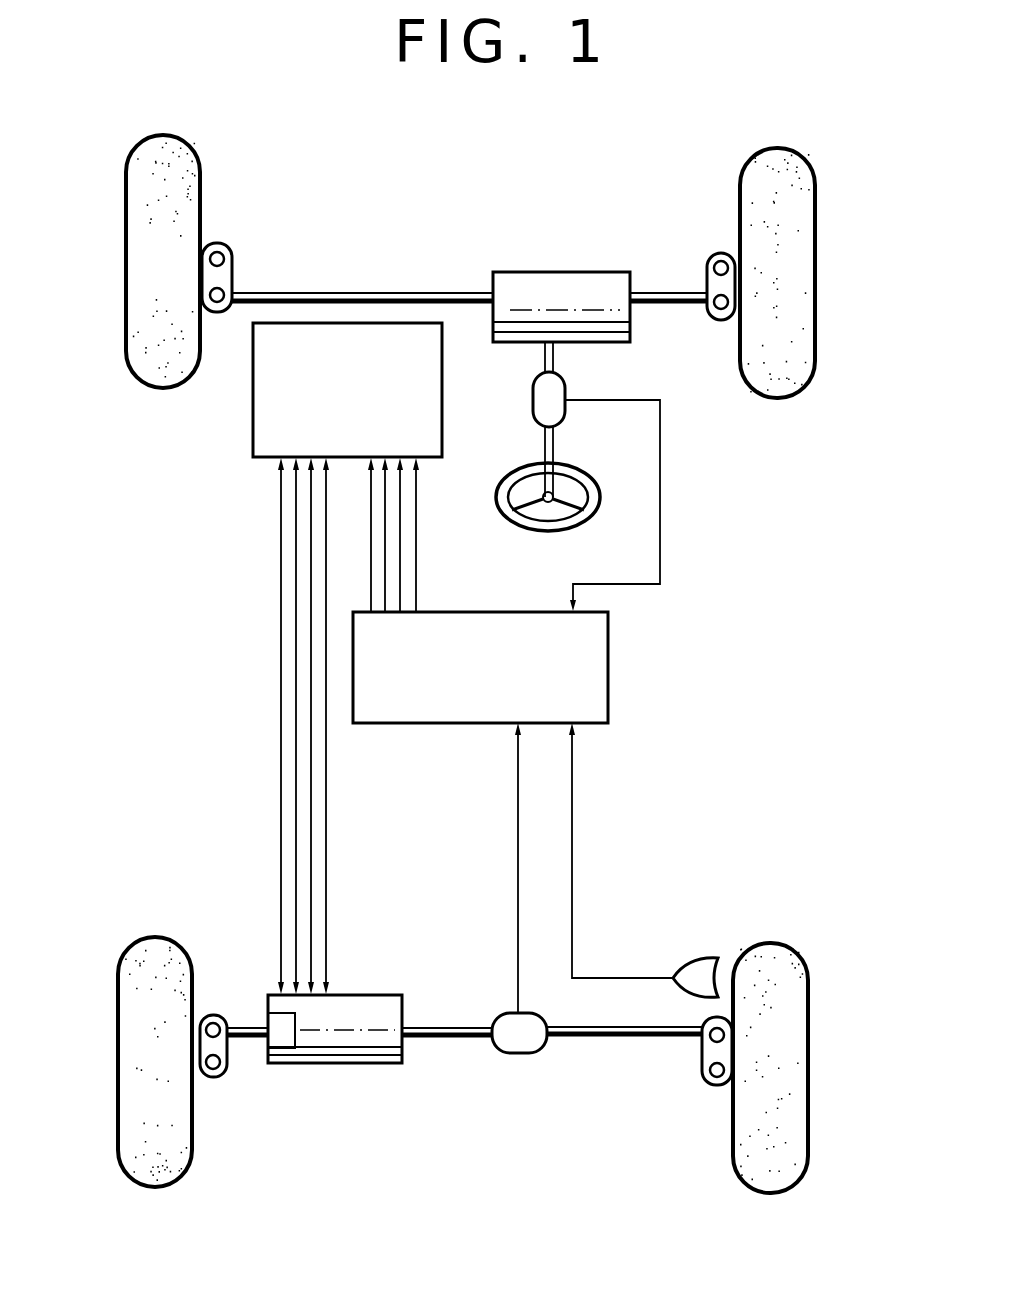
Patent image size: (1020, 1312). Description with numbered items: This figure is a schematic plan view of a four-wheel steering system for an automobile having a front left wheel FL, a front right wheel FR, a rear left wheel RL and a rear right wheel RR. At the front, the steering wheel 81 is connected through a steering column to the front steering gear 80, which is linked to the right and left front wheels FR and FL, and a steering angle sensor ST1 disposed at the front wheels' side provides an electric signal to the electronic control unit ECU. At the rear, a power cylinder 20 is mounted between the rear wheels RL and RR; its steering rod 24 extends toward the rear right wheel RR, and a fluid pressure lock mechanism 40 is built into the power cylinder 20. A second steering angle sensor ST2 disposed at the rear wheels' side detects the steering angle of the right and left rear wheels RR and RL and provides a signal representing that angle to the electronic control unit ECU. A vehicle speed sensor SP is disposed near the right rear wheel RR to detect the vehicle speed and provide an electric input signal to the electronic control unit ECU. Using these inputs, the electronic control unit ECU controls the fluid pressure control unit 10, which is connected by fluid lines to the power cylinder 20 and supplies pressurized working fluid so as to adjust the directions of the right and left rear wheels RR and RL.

The front left wheel FL is at (126, 212).
The front right wheel FR is at (815, 240).
The rear left wheel RL is at (118, 1047).
The rear right wheel RR is at (808, 1052).
The front steering gear 80 is at (595, 272).
The steering wheel 81 is at (530, 530).
The steering angle sensor ST1 is at (533, 393).
The fluid pressure control unit 10 is at (253, 410).
The electronic control unit ECU is at (452, 727).
The power cylinder 20 is at (320, 1057).
The fluid pressure lock mechanism 40 is at (285, 1035).
The steering rod 24 is at (630, 1042).
The steering angle sensor ST2 is at (535, 1050).
The vehicle speed sensor SP is at (700, 958).